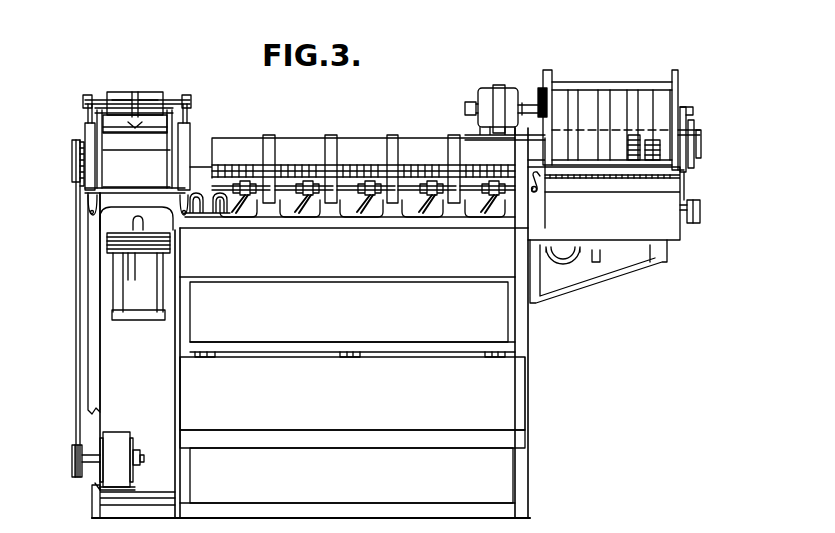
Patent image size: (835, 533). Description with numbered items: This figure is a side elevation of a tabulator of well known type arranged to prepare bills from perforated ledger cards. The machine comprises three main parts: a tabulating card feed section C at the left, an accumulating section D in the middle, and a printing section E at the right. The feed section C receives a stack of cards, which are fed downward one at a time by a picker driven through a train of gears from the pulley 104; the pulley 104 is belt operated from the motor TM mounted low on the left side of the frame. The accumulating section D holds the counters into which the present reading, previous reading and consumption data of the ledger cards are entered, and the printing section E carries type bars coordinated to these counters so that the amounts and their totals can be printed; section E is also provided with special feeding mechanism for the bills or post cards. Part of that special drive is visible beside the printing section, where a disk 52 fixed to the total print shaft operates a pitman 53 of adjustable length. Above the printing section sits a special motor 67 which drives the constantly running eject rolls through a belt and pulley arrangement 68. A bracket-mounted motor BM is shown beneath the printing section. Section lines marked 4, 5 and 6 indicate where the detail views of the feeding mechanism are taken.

The pulley 104 is at (72, 152).
The tabulating card feed section C is at (137, 125).
The accumulating section D is at (350, 164).
The printing section E is at (610, 113).
The motor TM is at (116, 438).
The bracket mounted motor BM is at (568, 252).
The special motor 67 is at (485, 90).
The belt and pulley arrangement 68 is at (545, 90).
The pitman 53 is at (697, 178).
The disk 52 is at (701, 220).
The section line 4- 4 is at (530, 166).
The section line 5- 5 is at (690, 222).
The section line 6- 6 is at (770, 265).